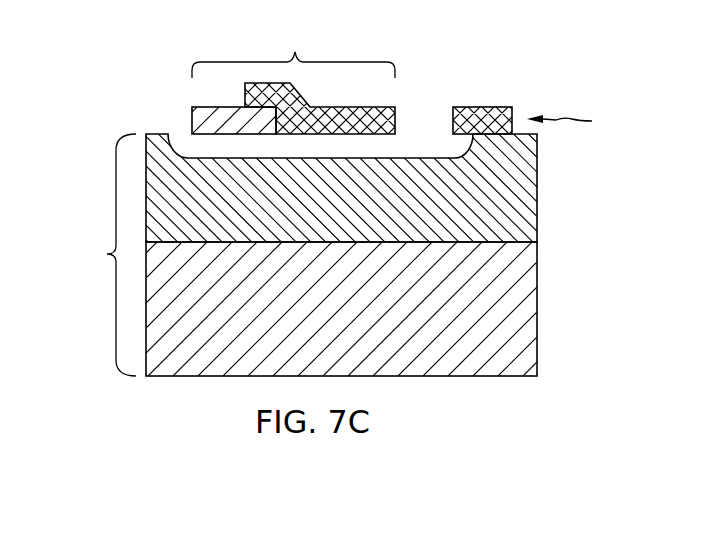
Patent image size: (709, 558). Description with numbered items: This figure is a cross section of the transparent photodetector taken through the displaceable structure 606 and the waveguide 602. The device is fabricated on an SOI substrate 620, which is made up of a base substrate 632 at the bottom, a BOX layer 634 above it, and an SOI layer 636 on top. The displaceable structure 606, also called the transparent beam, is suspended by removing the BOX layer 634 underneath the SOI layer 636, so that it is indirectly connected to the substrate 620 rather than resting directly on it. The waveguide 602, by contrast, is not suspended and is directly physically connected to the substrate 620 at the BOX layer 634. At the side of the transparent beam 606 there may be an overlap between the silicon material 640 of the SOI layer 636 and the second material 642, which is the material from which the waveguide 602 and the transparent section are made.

The waveguide 602 is at (483, 107).
The displaceable structure 606 is at (295, 51).
The SOI substrate 620 is at (107, 254).
The base substrate 632 is at (522, 312).
The BOX layer 634 is at (527, 193).
The SOI layer 636 is at (582, 123).
The material of the SOI layer 640 is at (192, 110).
The second material 642 is at (395, 117).